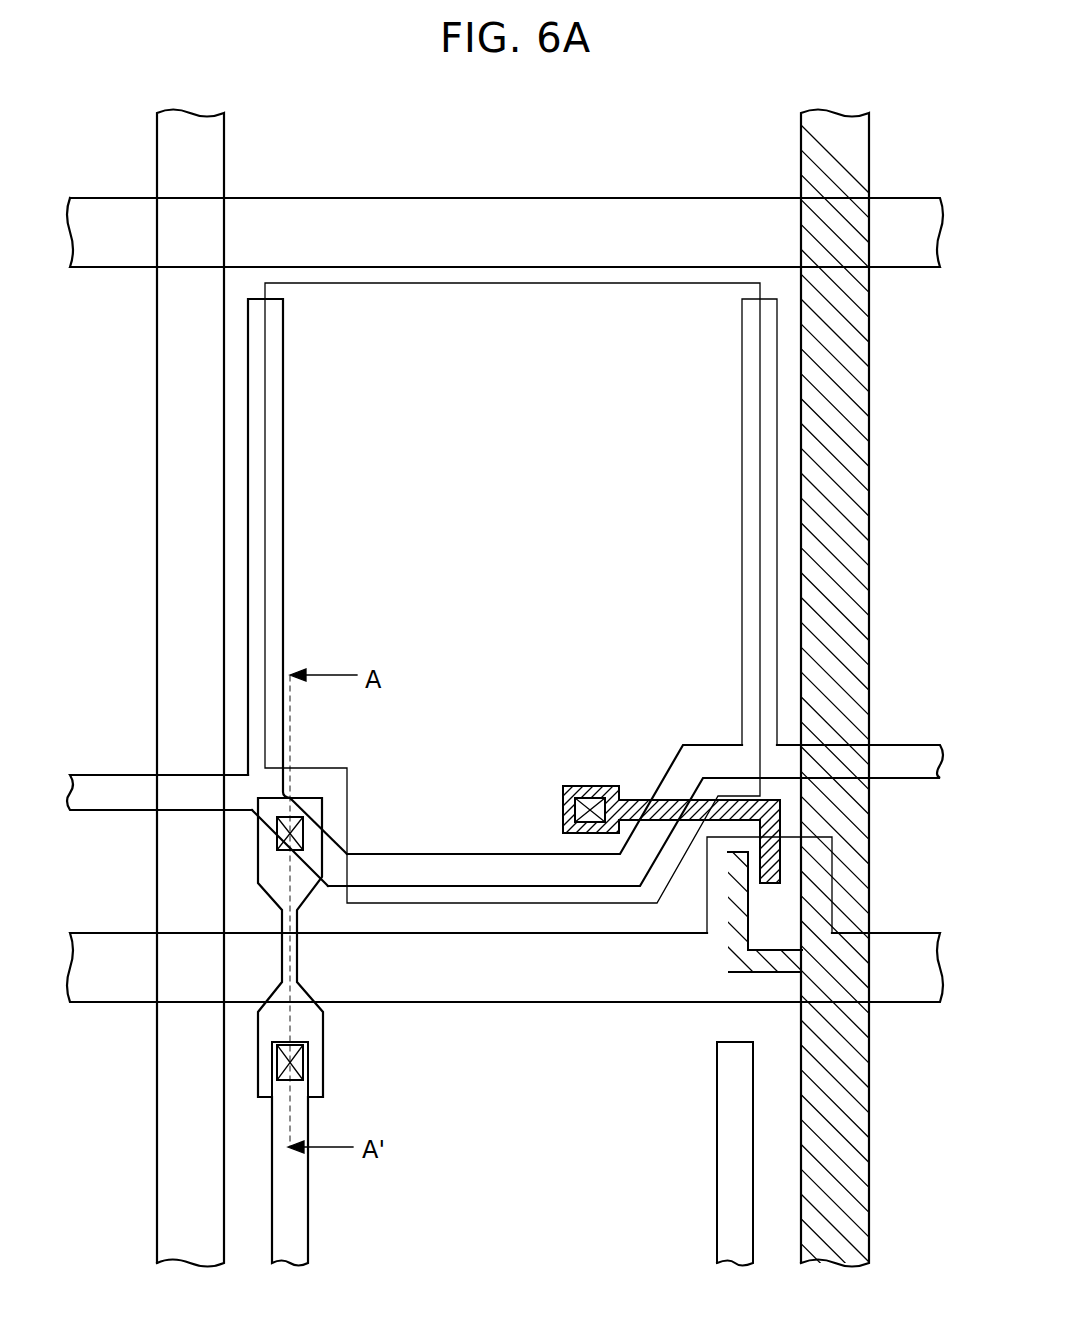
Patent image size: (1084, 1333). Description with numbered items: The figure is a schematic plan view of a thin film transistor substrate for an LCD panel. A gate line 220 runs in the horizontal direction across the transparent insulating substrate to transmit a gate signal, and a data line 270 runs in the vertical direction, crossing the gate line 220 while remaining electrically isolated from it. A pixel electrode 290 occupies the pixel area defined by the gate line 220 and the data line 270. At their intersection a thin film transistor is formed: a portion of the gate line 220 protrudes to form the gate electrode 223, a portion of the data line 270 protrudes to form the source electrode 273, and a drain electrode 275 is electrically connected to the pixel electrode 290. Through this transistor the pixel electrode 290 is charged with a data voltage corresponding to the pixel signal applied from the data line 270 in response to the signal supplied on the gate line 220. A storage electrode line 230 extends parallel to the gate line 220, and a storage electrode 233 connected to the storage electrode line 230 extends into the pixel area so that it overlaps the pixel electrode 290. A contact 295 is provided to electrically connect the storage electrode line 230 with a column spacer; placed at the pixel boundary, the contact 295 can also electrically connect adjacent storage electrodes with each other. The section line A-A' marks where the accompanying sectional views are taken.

The gate line 220 is at (107, 955).
The gate electrode 223 is at (772, 900).
The storage electrode line 230 is at (107, 793).
The storage electrode 233 is at (445, 865).
The data line 270 is at (862, 503).
The source electrode 273 is at (735, 957).
The drain electrode 275 is at (780, 812).
The pixel electrode 290 is at (512, 283).
The contact 295 is at (322, 1053).